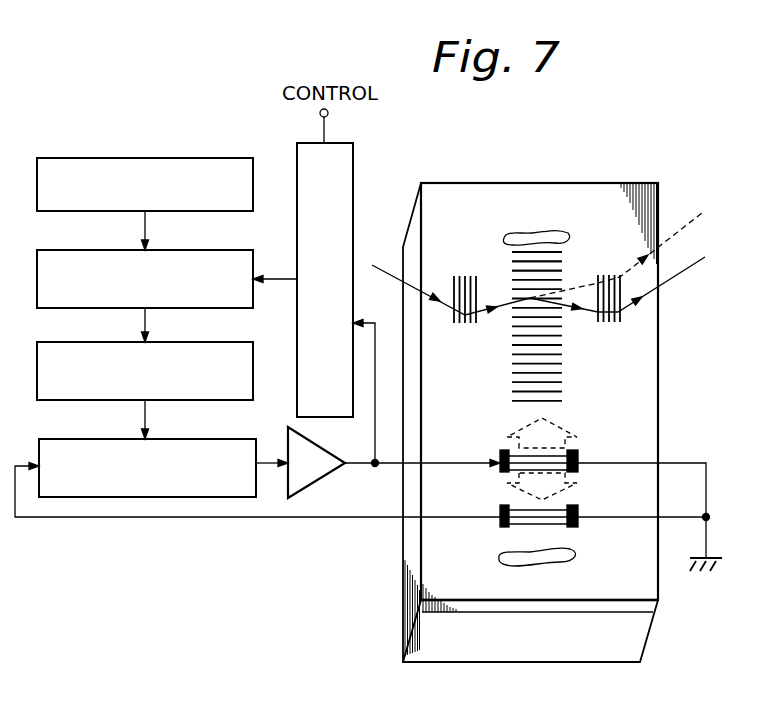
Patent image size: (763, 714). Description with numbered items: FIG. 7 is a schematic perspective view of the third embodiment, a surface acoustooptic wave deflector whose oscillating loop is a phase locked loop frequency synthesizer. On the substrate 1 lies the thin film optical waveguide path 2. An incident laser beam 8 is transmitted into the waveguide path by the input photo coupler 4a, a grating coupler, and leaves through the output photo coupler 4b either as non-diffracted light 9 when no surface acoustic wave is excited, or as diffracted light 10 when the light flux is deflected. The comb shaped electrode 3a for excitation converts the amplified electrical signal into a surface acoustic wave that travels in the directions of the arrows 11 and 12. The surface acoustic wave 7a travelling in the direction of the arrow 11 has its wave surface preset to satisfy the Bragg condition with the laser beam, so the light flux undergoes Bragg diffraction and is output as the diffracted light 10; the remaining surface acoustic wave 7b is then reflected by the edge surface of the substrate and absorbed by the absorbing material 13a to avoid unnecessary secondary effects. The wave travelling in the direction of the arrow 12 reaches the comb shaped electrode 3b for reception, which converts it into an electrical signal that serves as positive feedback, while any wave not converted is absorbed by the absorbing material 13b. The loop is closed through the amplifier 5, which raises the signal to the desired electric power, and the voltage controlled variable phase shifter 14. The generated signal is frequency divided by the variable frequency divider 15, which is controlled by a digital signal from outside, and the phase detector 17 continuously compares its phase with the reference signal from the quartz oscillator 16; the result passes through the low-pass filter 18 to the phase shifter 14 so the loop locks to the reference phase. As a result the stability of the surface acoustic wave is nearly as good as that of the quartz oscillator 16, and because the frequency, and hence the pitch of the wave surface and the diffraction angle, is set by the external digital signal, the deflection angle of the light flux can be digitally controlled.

The substrate 1 is at (440, 648).
The thin film optical waveguide path 2 is at (653, 605).
The comb shaped electrode for excitation of a surface acoustic wave 3a is at (578, 447).
The comb shaped electrode for reception of the surface acoustic wave 3b is at (578, 525).
The input photo coupler 4a is at (462, 275).
The output photo coupler 4b is at (606, 275).
The amplifier 5 is at (318, 449).
The surface acoustic wave 7a is at (512, 370).
The surface acoustic wave 7b is at (512, 269).
The incident laser beam 8 is at (373, 261).
The non-diffracted light 9 is at (685, 223).
The diffracted light 10 is at (699, 256).
The arrow 11 is at (517, 418).
The arrow 12 is at (508, 491).
The absorbing material 13a is at (537, 230).
The absorbing material 13b is at (499, 559).
The voltage controlled variable phase shifter 14 is at (214, 439).
The variable frequency divider 15 is at (297, 164).
The quartz oscillator 16 is at (201, 158).
The phase detector 17 is at (218, 250).
The low-pass filter 18 is at (217, 342).